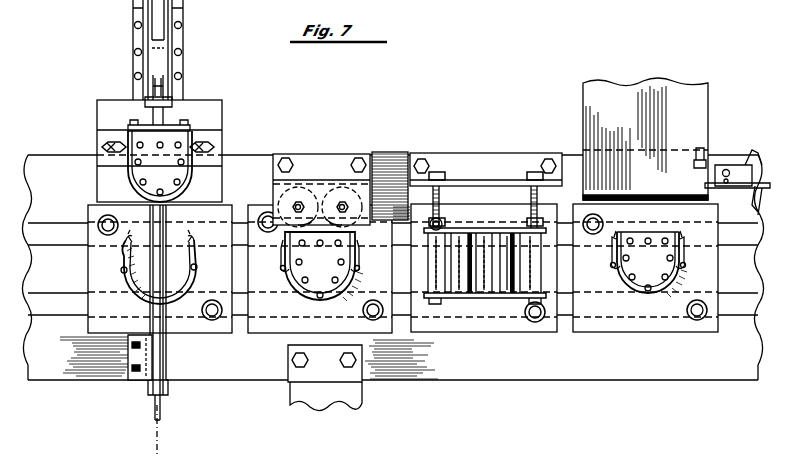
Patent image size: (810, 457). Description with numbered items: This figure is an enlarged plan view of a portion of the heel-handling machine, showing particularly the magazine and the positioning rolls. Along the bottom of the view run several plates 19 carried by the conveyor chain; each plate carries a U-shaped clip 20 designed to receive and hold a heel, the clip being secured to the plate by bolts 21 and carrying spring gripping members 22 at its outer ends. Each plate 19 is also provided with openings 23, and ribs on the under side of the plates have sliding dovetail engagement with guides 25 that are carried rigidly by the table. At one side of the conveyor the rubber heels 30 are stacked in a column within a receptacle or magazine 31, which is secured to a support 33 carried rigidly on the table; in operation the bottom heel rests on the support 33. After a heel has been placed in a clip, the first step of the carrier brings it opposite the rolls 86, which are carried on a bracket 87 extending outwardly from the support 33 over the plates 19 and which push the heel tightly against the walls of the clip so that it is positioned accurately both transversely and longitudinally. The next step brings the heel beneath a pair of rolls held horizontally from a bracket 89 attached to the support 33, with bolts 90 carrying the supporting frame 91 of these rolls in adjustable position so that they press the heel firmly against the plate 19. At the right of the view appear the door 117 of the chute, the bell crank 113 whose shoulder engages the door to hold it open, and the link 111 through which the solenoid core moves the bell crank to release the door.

The plate 19 is at (211, 334).
The U-shaped clip 20 is at (292, 285).
The bolts 21 is at (121, 270).
The spring gripping members 22 is at (192, 243).
The openings 23 is at (698, 308).
The guides 25 is at (214, 318).
The rubber heels 30 is at (130, 182).
The magazine 31 is at (188, 180).
The support 33 is at (396, 156).
The rolls 86 is at (303, 200).
The bracket 87 is at (345, 160).
The bracket 89 is at (476, 165).
The bolts 90 is at (437, 172).
The supporting frame 91 is at (450, 298).
The link 111 is at (762, 183).
The bell crank 113 is at (730, 175).
The door 117 is at (700, 108).